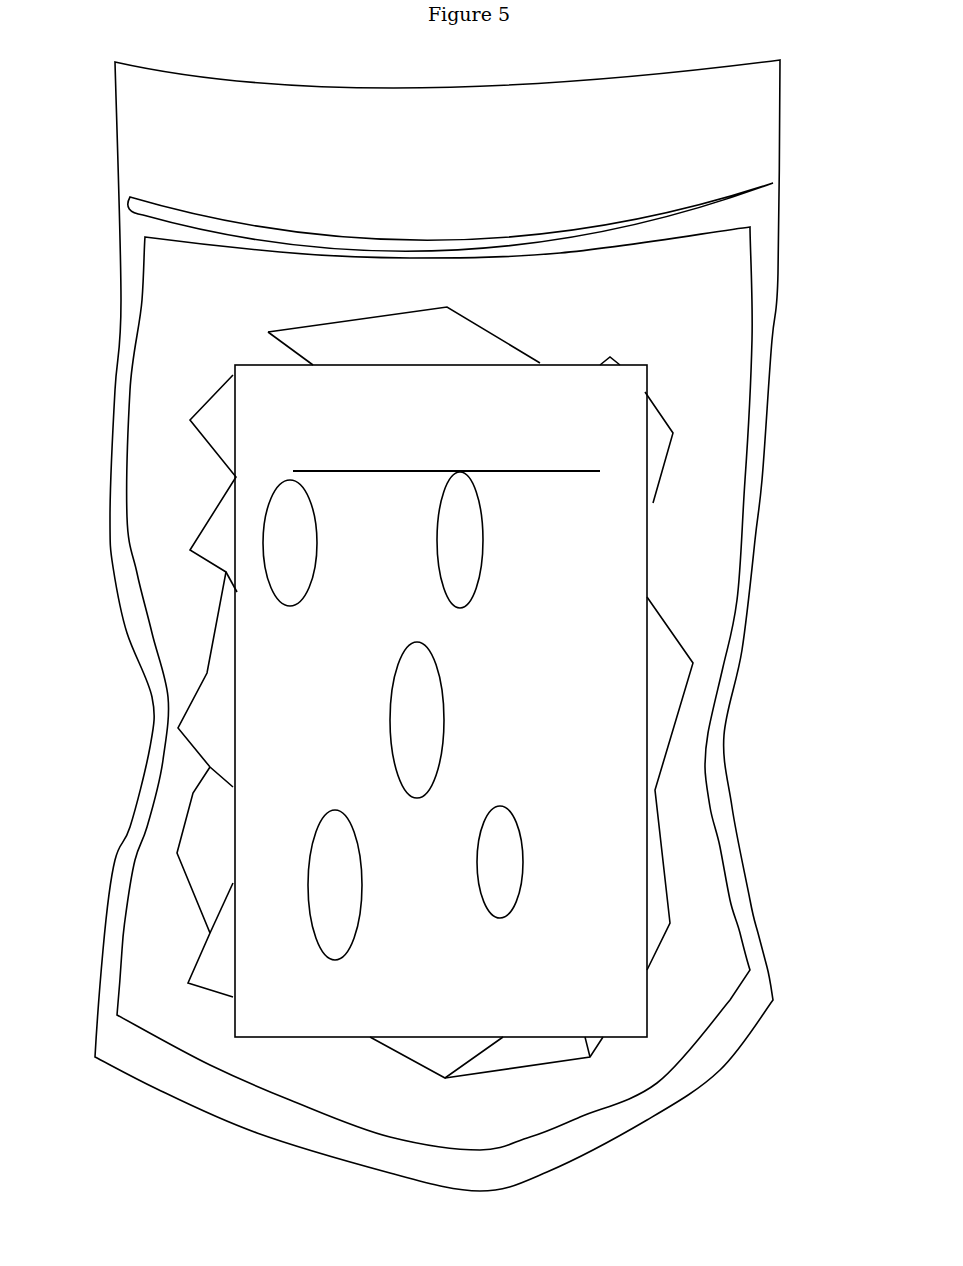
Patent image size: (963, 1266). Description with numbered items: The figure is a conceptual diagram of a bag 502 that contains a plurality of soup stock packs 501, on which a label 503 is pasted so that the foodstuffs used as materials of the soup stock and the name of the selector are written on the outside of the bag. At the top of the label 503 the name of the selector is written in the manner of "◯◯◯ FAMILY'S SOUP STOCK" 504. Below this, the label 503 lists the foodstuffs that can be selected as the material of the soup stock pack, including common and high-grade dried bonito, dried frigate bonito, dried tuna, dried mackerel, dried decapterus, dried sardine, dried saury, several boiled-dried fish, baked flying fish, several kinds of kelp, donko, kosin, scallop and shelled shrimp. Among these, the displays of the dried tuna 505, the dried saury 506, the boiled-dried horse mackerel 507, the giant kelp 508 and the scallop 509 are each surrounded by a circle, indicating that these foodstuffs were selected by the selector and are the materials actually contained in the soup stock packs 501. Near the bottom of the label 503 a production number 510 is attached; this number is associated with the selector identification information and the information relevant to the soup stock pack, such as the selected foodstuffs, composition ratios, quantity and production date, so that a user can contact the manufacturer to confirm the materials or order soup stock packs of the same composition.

The soup stock packs 501 is at (372, 345).
The bag 502 is at (673, 307).
The label 503 is at (283, 410).
The "◯◯◯ FAMILY'S SOUP STOCK" display 504 is at (510, 413).
The dried tuna display 505 is at (477, 488).
The dried saury display 506 is at (263, 535).
The boiled-dried horse mackerel display 507 is at (433, 663).
The giant kelp display 508 is at (520, 845).
The scallop display 509 is at (312, 836).
The production number 510 is at (520, 975).